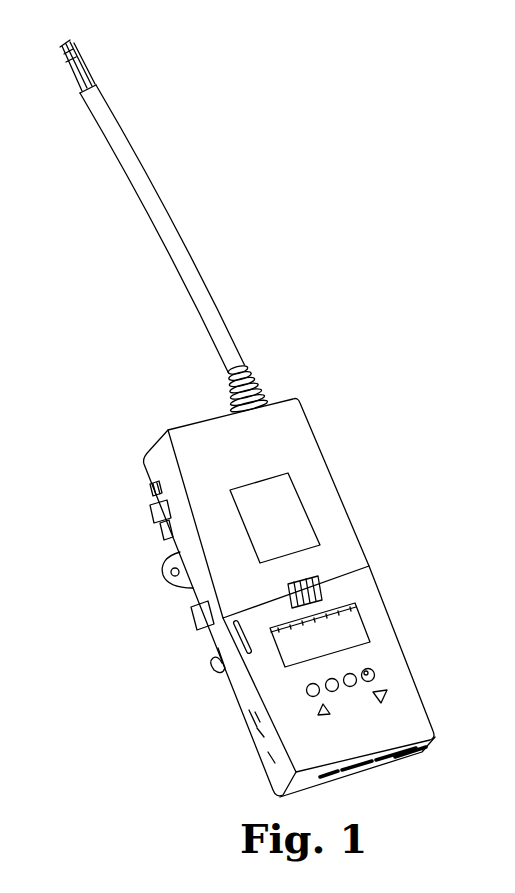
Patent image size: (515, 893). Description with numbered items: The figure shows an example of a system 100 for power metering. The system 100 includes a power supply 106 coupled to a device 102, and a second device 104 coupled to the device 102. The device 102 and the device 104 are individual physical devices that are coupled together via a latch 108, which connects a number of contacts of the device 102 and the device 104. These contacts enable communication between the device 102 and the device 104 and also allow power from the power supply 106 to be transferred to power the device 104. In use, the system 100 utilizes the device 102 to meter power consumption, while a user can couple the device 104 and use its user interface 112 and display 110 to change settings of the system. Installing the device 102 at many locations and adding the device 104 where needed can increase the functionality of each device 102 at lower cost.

The system for power metering 100 is at (360, 130).
The device 102 is at (325, 492).
The device 104 is at (390, 652).
The power supply 106 is at (263, 383).
The latch 108 is at (313, 580).
The display 110 is at (347, 630).
The user interface 112 is at (373, 679).